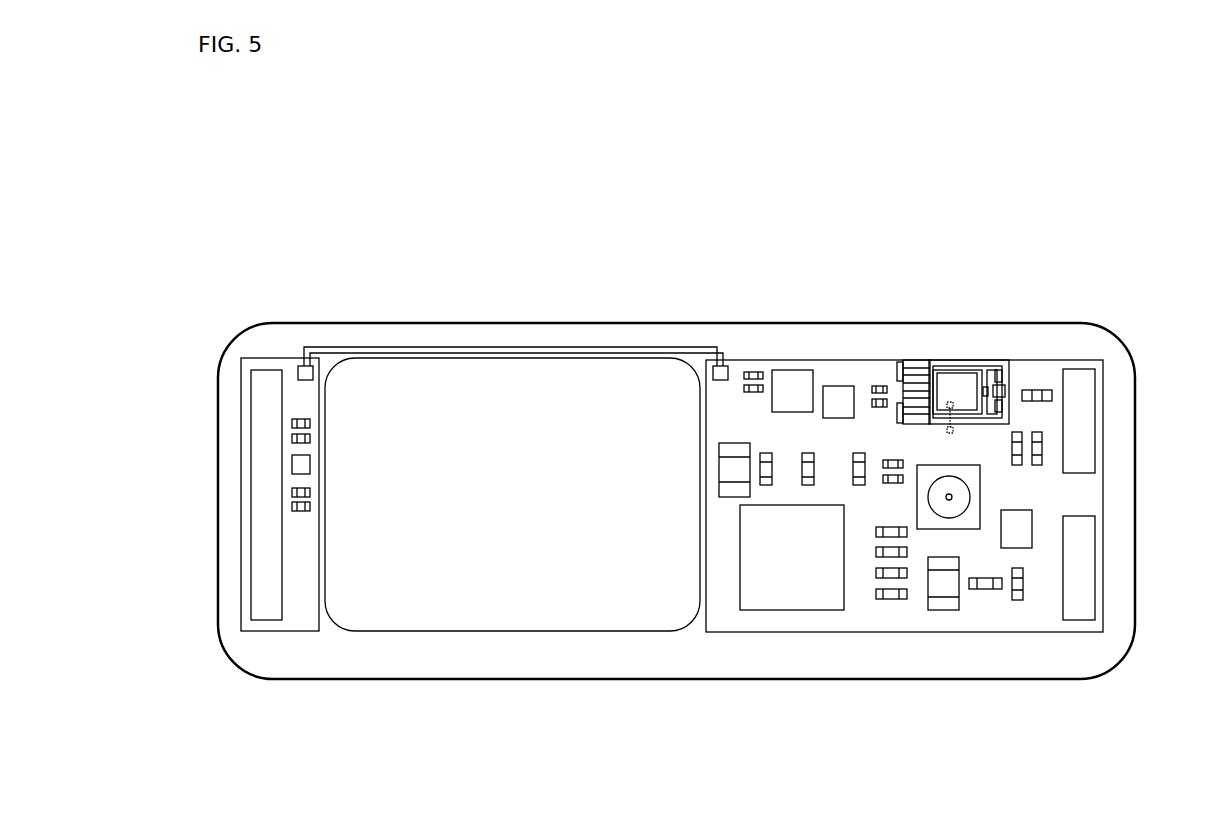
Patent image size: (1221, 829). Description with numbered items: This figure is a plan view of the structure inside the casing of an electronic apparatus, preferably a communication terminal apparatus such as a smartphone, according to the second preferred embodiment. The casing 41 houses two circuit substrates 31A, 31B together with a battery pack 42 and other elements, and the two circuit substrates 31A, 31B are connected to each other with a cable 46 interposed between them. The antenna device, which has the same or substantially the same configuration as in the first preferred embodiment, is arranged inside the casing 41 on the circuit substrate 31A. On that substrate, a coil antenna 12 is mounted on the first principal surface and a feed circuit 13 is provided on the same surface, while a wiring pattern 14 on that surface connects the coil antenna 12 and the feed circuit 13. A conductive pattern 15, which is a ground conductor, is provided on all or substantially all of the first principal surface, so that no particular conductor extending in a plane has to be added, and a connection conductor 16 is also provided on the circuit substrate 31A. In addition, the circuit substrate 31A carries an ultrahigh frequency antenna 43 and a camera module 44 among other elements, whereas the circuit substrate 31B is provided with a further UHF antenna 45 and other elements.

The casing 41 is at (1115, 333).
The circuit substrate 31A is at (875, 632).
The circuit substrate 31B is at (304, 608).
The battery pack 42 is at (512, 610).
The UHF antenna 45 is at (260, 488).
The cable 46 is at (503, 347).
The UHF antenna 43 is at (1086, 430).
The camera module 44 is at (977, 485).
The coil antenna 12 is at (916, 360).
The feed circuit 13 is at (992, 352).
The wiring pattern 14 is at (958, 365).
The conductive pattern 15 is at (880, 368).
The connection conductor 16 is at (955, 433).